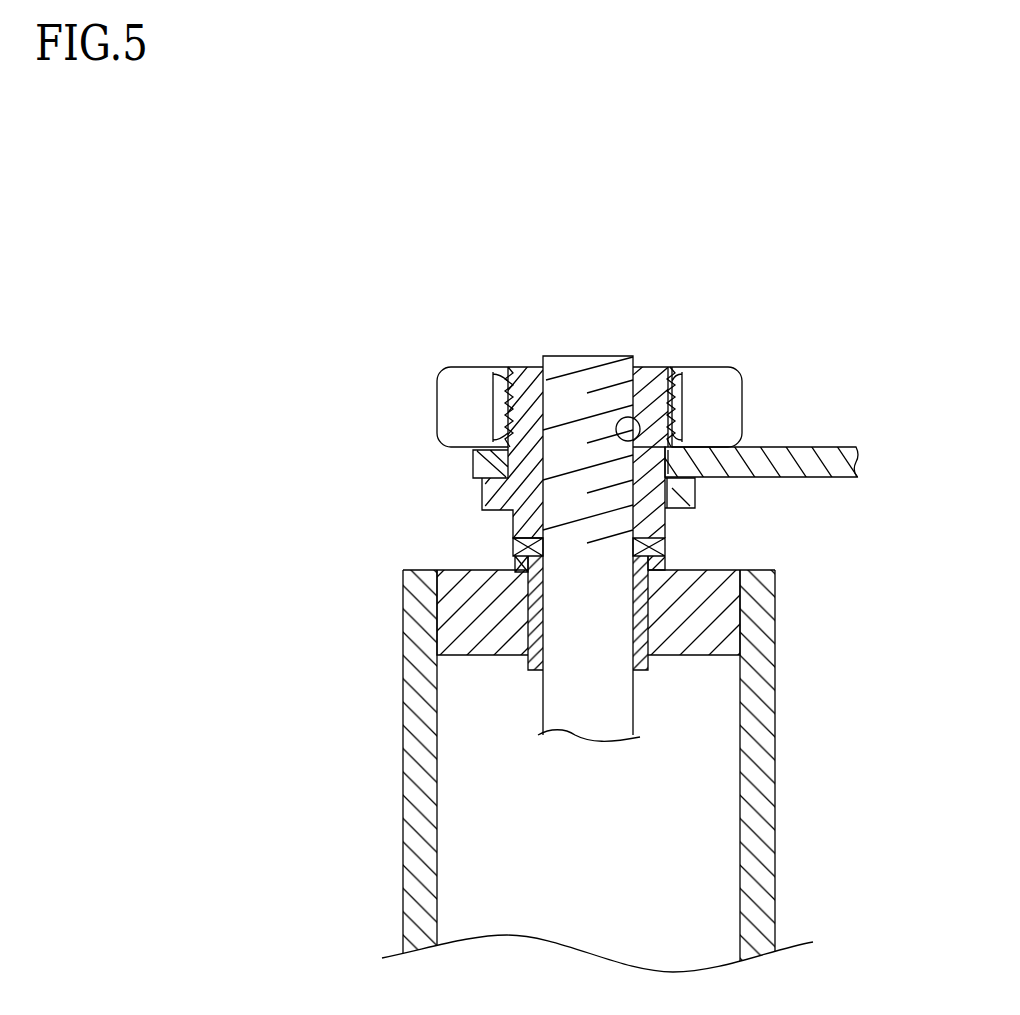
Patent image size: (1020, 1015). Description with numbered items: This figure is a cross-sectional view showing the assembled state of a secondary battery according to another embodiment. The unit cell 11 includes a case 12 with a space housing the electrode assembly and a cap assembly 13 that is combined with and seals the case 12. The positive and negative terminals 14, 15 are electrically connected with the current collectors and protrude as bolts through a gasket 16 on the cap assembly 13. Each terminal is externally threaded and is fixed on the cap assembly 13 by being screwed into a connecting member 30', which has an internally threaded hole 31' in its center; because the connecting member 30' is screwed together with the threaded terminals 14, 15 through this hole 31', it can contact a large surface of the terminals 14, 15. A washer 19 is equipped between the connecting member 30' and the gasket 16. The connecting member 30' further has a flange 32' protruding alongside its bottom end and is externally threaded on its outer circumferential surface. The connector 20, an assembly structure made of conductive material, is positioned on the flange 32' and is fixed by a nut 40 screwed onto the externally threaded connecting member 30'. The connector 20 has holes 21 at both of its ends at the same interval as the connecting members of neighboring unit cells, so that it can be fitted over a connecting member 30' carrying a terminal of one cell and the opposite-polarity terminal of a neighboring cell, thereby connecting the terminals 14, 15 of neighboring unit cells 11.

The unit cell 11 is at (818, 831).
The case 12 is at (418, 861).
The cap assembly 13 is at (395, 625).
The positive terminal 14 is at (607, 686).
The negative terminal 15 is at (709, 636).
The gasket 16 is at (513, 558).
The washer 19 is at (660, 547).
The connector 20 is at (821, 447).
The hole 21 is at (513, 444).
The connecting member 30' is at (589, 507).
The internally threaded hole 31' is at (661, 422).
The flange 32' is at (529, 471).
The nut 40 is at (720, 398).